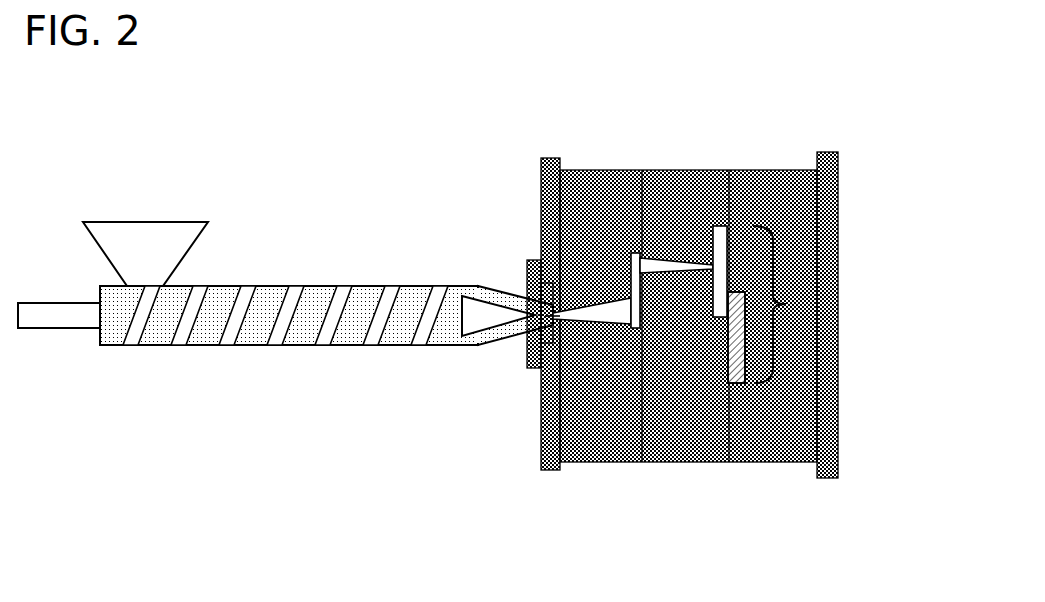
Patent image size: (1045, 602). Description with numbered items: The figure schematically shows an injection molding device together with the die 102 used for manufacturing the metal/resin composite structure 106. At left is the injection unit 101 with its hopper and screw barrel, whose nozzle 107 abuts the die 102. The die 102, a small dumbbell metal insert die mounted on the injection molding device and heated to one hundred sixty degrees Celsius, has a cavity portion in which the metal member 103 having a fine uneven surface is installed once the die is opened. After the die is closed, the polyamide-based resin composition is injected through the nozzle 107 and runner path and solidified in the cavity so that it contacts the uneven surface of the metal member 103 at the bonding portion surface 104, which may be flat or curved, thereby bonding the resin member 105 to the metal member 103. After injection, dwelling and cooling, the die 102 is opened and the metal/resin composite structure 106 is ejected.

The injection unit 101 is at (237, 286).
The die 102 is at (842, 147).
The metal member 103 is at (745, 364).
The bonding portion surface 104 is at (727, 297).
The resin member 105 is at (713, 296).
The metal/resin composite structure 106 is at (786, 305).
The nozzle 107 is at (552, 318).